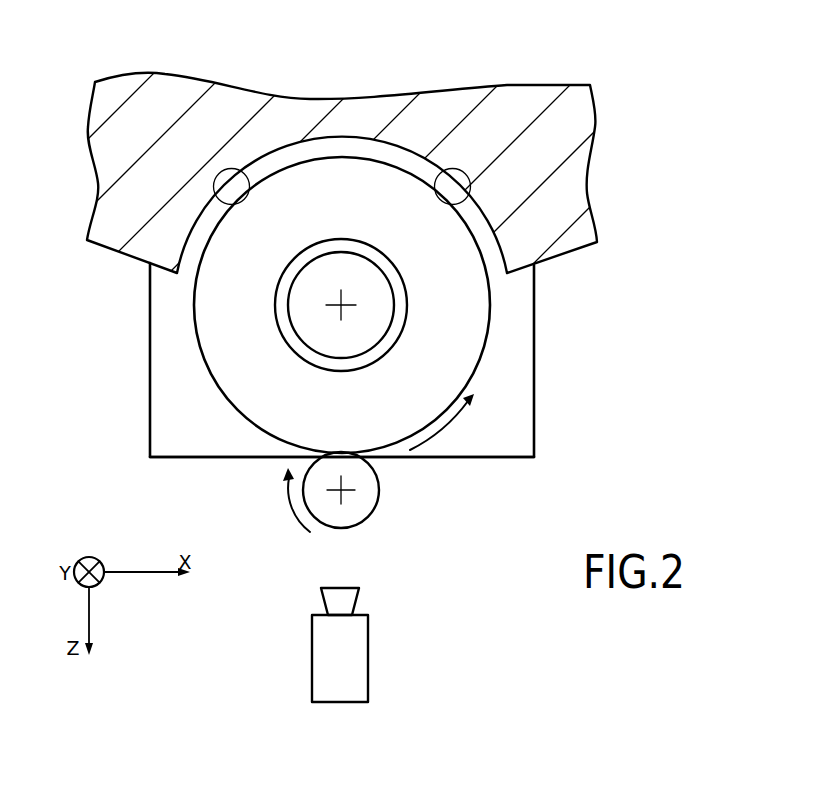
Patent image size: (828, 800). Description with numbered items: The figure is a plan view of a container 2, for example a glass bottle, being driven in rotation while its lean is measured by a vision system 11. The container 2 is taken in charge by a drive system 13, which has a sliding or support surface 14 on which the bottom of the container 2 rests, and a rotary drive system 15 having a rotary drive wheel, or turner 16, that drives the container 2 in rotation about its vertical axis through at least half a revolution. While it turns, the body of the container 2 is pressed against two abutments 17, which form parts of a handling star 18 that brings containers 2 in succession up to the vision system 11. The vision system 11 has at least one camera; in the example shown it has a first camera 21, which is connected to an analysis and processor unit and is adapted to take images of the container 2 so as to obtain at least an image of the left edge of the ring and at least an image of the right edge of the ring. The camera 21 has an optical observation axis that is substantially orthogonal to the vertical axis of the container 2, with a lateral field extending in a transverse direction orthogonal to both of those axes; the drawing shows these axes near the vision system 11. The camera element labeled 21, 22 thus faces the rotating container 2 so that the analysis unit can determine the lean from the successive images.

The container 2 is at (263, 441).
The vision system 11 is at (401, 640).
The drive system 13 is at (548, 480).
The support surface 14 is at (518, 393).
The rotary drive system 15 is at (392, 492).
The turner 16 is at (358, 513).
The abutments 17 is at (441, 188).
The handling star 18 is at (573, 175).
The first camera 21 is at (382, 658).
The light source 22 is at (365, 655).